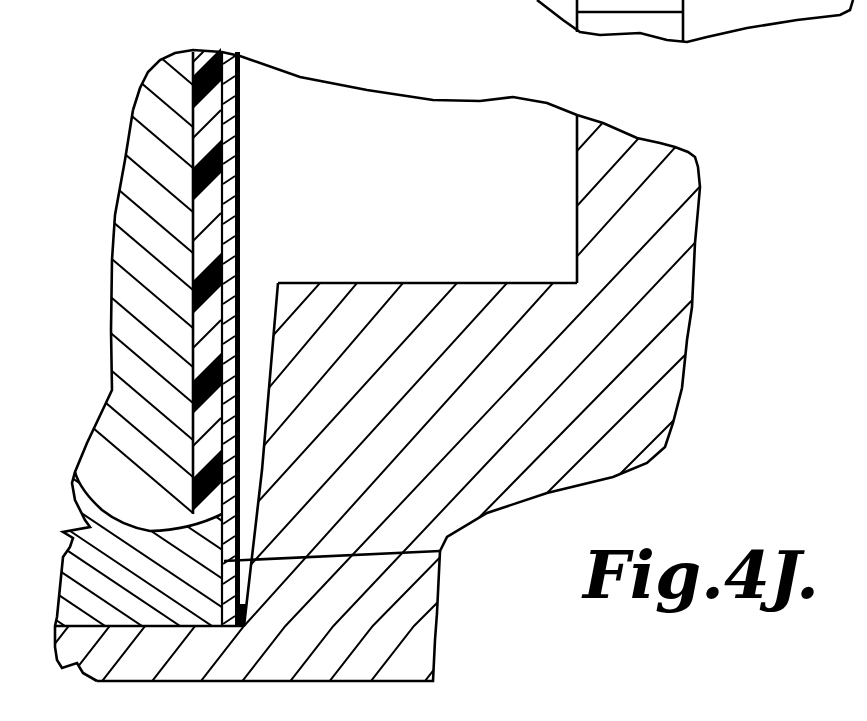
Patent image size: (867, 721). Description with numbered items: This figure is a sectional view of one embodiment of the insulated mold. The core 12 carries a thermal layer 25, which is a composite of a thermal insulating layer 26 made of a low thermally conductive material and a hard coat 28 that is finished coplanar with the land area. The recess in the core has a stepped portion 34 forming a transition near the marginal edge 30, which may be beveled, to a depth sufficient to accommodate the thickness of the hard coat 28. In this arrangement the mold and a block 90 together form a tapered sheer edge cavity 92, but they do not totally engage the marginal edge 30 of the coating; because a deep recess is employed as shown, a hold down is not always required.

The core 12 is at (112, 283).
The thermal layer 25 is at (207, 50).
The thermal insulating layer 26 is at (200, 113).
The hard coat 28 is at (232, 103).
The marginal edge 30 is at (75, 472).
The stepped portion 34 is at (582, 576).
The block 90 is at (437, 613).
The tapered sheer edge cavity 92 is at (257, 302).